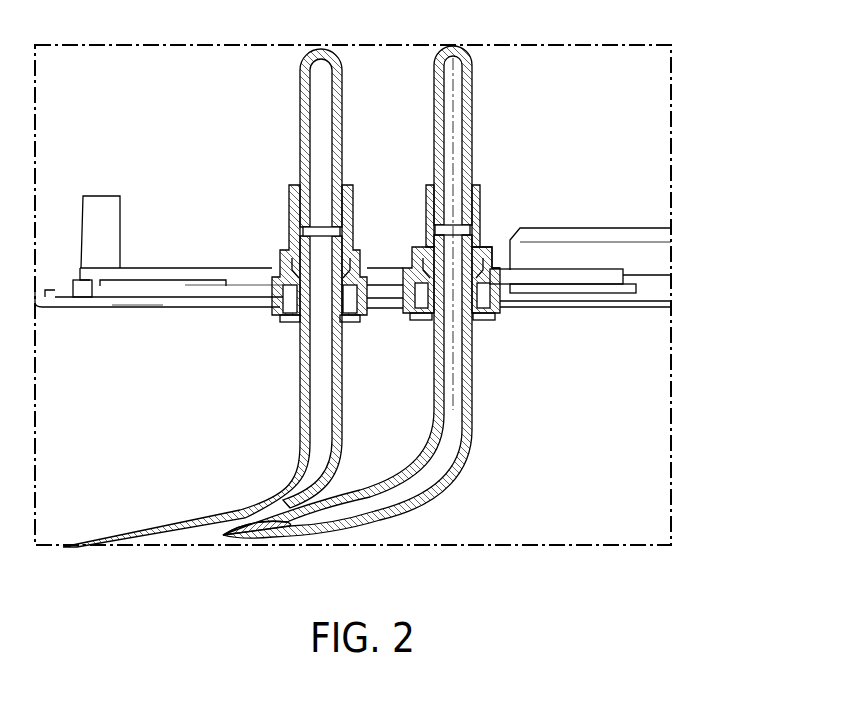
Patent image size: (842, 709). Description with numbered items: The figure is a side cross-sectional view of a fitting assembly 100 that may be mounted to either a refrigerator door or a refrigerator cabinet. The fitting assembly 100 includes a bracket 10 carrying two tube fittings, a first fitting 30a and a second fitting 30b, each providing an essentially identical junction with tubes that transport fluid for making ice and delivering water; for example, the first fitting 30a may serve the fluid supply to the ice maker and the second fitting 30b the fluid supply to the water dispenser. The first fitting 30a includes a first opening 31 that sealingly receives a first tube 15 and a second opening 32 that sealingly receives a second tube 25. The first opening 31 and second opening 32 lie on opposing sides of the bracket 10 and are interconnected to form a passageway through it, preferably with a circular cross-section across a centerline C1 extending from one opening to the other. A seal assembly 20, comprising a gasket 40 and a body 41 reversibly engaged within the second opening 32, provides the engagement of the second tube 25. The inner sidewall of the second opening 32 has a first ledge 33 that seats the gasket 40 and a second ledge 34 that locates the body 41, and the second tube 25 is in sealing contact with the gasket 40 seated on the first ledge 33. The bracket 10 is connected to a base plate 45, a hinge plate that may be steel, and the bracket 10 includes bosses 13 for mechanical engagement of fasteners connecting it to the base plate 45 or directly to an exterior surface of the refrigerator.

The fitting assembly 100 is at (664, 117).
The bracket 10 is at (216, 292).
The bosses 13 is at (118, 228).
The first tube 15 is at (471, 86).
The seal assembly 20 is at (415, 322).
The second tube 25 is at (432, 463).
The first fitting 30a is at (502, 300).
The second fitting 30b is at (270, 250).
The first opening 31 is at (491, 188).
The second opening 32 is at (501, 331).
The first ledge 33 is at (520, 232).
The second ledge 34 is at (505, 315).
The gasket 40 is at (493, 262).
The body 41 is at (505, 272).
The base plate 45 is at (636, 294).
The centerline C1 is at (451, 86).